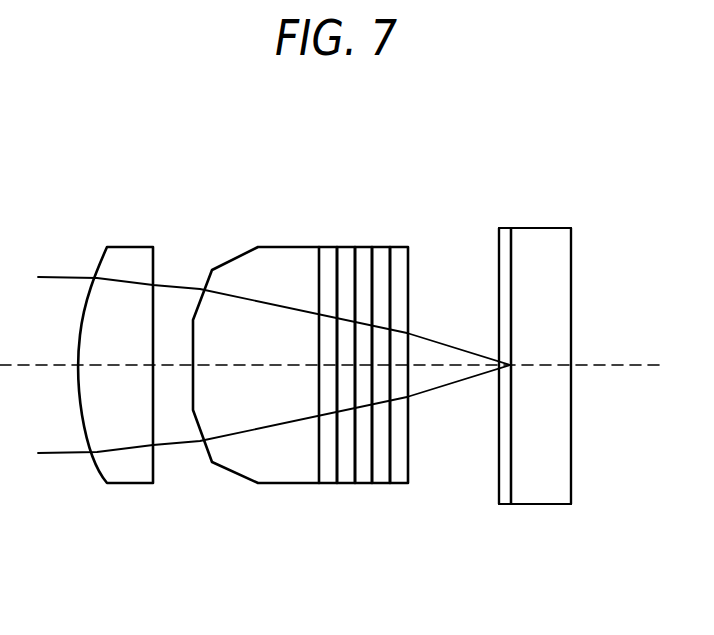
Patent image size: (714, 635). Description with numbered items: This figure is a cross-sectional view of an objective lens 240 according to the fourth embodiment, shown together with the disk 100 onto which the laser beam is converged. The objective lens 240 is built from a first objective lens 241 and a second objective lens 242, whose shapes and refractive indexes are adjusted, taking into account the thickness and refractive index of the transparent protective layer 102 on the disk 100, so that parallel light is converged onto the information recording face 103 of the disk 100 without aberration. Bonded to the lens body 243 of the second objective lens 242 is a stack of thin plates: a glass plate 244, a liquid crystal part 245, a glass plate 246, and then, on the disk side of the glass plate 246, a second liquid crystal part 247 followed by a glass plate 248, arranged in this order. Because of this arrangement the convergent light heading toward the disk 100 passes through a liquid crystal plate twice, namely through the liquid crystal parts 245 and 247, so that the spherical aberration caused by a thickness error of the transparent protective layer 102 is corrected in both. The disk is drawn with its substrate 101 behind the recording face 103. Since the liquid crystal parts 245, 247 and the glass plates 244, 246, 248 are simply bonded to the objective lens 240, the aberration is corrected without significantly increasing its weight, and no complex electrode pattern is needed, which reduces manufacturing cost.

The disk 100 is at (588, 530).
The substrate 101 is at (547, 275).
The transparent protective layer 102 is at (503, 482).
The information recording face 103 is at (506, 443).
The objective lens 240 is at (225, 200).
The first objective lens 241 is at (120, 470).
The second objective lens 242 is at (350, 222).
The lens body 243 is at (262, 470).
The glass plate 244 is at (327, 470).
The liquid crystal part 245 is at (347, 470).
The glass plate 246 is at (363, 470).
The second liquid crystal part 247 is at (382, 260).
The glass plate 248 is at (402, 260).